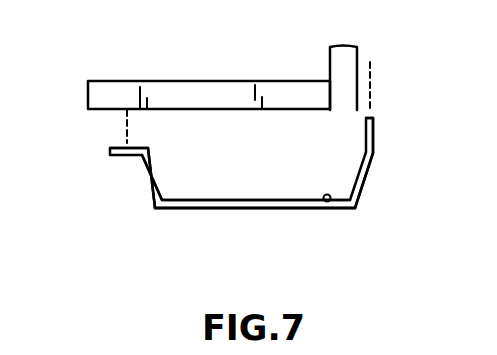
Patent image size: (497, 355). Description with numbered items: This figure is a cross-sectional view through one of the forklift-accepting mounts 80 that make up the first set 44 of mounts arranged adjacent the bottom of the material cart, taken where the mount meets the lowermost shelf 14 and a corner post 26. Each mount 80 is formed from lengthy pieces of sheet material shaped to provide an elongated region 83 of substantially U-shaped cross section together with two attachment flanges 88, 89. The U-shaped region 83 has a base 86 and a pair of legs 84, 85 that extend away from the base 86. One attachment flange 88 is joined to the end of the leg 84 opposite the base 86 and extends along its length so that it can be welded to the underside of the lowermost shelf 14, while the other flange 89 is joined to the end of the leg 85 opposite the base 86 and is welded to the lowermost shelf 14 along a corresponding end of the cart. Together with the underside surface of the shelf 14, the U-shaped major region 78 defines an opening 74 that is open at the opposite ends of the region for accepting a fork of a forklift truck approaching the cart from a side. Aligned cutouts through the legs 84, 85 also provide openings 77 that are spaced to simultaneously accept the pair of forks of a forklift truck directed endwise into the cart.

The lowermost shelf 14 is at (175, 81).
The corner post 26 is at (344, 58).
The first set of forklift-accepting mounts 44 is at (377, 209).
The opening 74 is at (330, 203).
The opening 77 is at (362, 166).
The U-shaped major region 78 is at (285, 208).
The mount 80 is at (363, 188).
The elongated region of substantially U-shaped cross section 83 is at (143, 164).
The leg 84 is at (150, 186).
The leg 85 is at (368, 168).
The base 86 is at (183, 208).
The attachment flange 88 is at (118, 147).
The attachment flange 89 is at (374, 121).